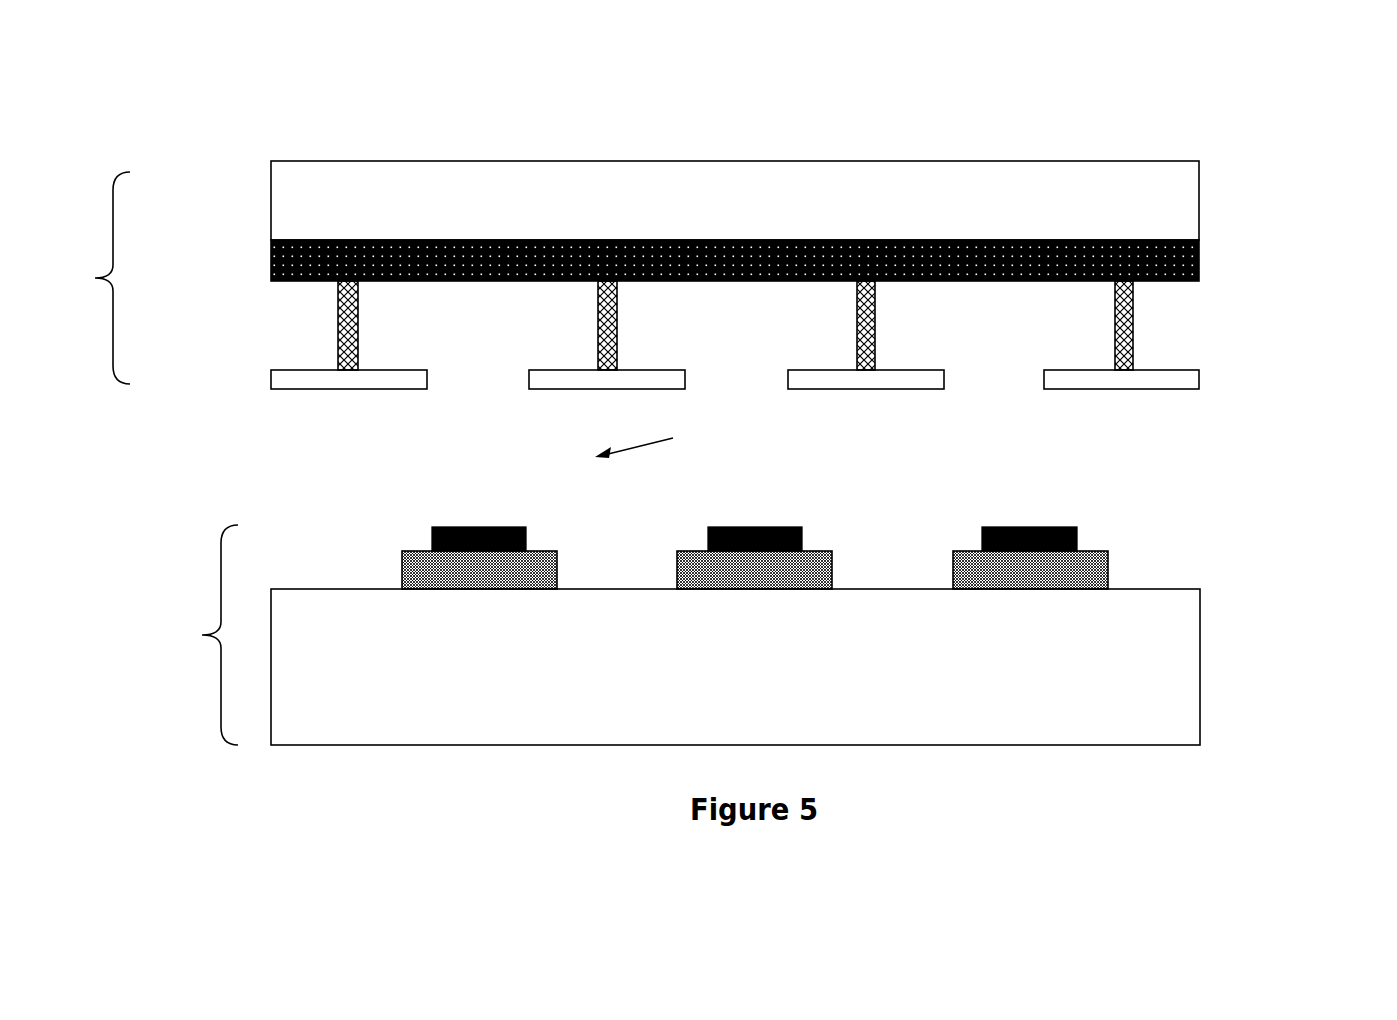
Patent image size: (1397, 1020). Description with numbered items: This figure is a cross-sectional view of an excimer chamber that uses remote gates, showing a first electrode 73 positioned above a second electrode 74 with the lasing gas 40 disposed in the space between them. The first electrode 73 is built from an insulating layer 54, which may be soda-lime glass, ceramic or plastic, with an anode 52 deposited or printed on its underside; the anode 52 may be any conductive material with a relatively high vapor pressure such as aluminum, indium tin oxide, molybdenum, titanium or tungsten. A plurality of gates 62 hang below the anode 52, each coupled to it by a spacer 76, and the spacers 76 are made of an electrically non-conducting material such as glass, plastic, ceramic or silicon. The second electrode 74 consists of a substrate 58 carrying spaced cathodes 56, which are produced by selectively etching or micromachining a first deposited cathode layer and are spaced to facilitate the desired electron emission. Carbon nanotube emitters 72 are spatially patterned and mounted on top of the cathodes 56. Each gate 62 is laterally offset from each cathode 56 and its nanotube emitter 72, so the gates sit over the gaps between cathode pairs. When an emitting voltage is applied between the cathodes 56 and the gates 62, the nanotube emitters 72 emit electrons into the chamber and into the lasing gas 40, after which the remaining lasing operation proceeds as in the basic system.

The lasing gas 40 is at (667, 438).
The anode 52 is at (1199, 260).
The insulating layer 54 is at (1199, 161).
The cathodes 56 is at (432, 589).
The substrate 58 is at (1200, 715).
The gates 62 is at (1167, 373).
The carbon nanotube emitters 72 is at (432, 527).
The first electrode 73 is at (88, 278).
The second electrode 74 is at (177, 635).
The spacers 76 is at (338, 338).